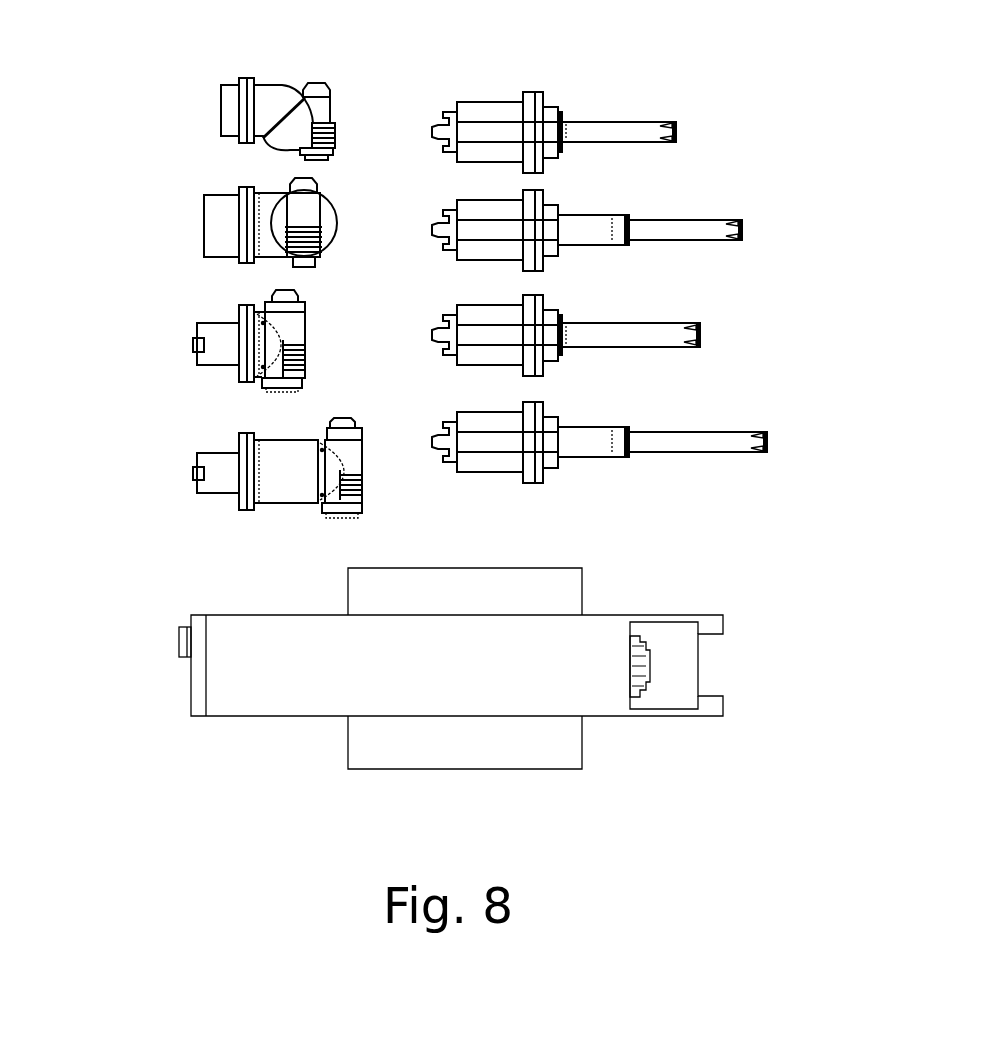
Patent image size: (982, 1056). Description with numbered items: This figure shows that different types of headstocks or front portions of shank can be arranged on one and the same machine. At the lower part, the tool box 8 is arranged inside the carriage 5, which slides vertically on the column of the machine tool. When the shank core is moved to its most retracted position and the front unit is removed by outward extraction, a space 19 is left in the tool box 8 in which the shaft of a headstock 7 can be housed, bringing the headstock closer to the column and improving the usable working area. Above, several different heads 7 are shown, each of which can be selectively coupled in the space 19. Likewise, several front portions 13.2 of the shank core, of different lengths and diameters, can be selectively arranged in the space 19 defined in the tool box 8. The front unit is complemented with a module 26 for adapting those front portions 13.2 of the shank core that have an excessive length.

The headstock 7 is at (203, 120).
The front portion of the shank core 13.2 is at (652, 132).
The module 26 is at (589, 212).
The carriage 5 is at (458, 738).
The tool box 8 is at (295, 671).
The space 19 is at (682, 668).